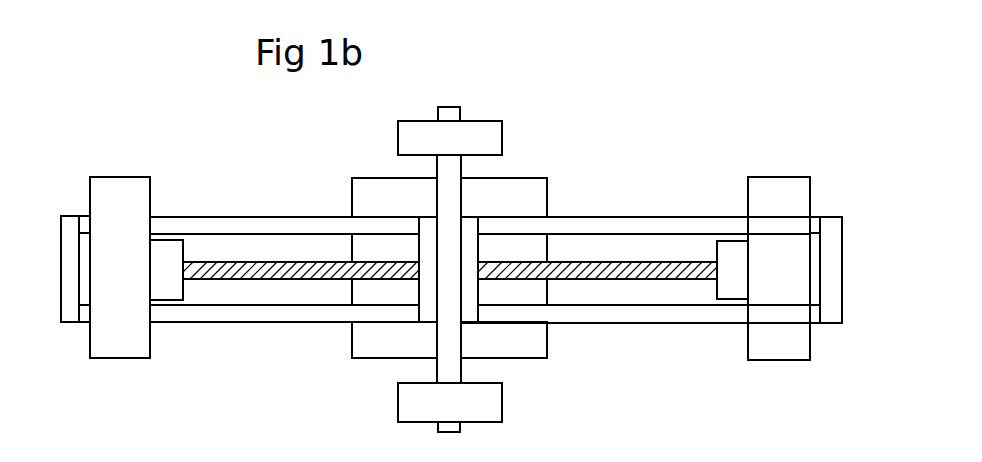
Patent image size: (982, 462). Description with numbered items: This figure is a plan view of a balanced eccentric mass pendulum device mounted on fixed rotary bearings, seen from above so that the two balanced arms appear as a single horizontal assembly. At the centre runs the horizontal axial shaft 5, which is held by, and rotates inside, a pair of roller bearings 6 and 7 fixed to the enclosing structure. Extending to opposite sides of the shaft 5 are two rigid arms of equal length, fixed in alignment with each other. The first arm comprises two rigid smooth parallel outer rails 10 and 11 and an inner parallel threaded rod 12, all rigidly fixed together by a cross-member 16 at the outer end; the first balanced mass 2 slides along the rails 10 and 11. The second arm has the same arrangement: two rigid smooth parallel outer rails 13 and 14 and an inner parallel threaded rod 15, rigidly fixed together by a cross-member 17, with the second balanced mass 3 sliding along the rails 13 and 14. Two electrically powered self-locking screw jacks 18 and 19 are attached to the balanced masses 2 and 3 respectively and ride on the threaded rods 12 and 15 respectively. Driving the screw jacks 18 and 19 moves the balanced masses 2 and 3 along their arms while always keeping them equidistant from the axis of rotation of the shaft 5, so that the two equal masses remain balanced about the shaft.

The first balanced mass 2 is at (118, 360).
The second balanced mass 3 is at (775, 360).
The horizontal axial shaft 5 is at (437, 338).
The roller bearing 6 is at (502, 400).
The roller bearing 7 is at (502, 135).
The outer rail 10 is at (213, 323).
The outer rail 11 is at (243, 217).
The threaded rod 12 is at (290, 280).
The outer rail 13 is at (618, 323).
The outer rail 14 is at (613, 218).
The threaded rod 15 is at (622, 262).
The cross-member 16 is at (70, 215).
The cross-member 17 is at (825, 218).
The self-locking screw jack 18 is at (165, 240).
The self-locking screw jack 19 is at (727, 243).